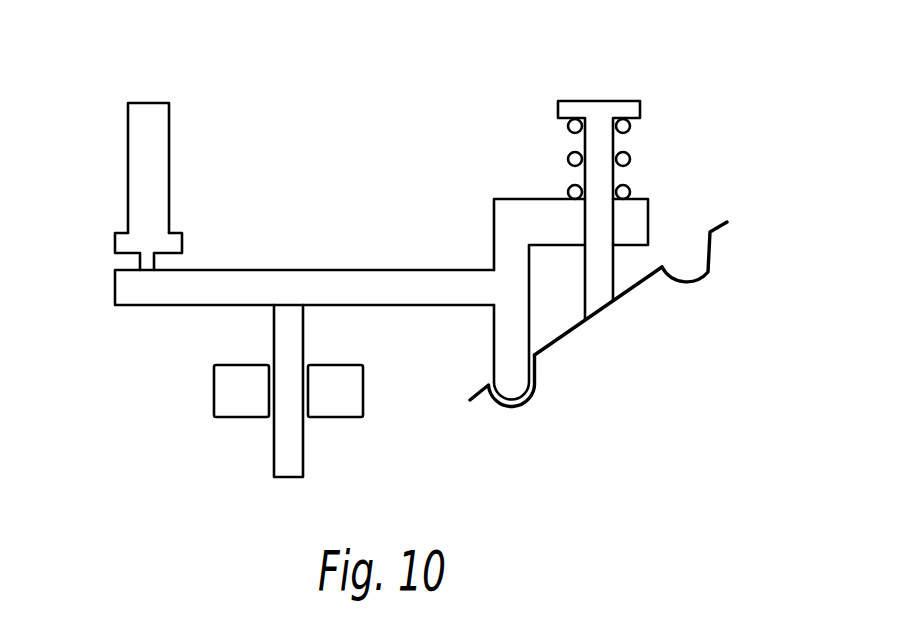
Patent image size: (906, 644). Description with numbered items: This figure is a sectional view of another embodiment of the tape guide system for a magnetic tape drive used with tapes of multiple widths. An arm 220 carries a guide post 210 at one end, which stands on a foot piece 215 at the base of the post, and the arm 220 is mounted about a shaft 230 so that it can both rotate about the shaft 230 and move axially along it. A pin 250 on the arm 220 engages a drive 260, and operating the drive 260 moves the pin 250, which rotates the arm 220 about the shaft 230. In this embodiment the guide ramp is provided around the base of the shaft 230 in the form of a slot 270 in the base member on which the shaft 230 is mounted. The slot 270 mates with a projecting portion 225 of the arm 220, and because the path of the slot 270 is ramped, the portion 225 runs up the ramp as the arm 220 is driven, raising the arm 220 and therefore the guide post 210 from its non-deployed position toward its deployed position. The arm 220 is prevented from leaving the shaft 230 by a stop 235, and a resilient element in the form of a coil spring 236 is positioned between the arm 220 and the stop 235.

The guide post 210 is at (137, 156).
The base plate 215 is at (117, 243).
The arm 220 is at (365, 285).
The projecting portion 225 is at (501, 331).
The shaft 230 is at (603, 310).
The stop 235 is at (602, 105).
The spring 236 is at (630, 158).
The pin 250 is at (282, 443).
The drive 260 is at (227, 390).
The slot 270 is at (532, 400).